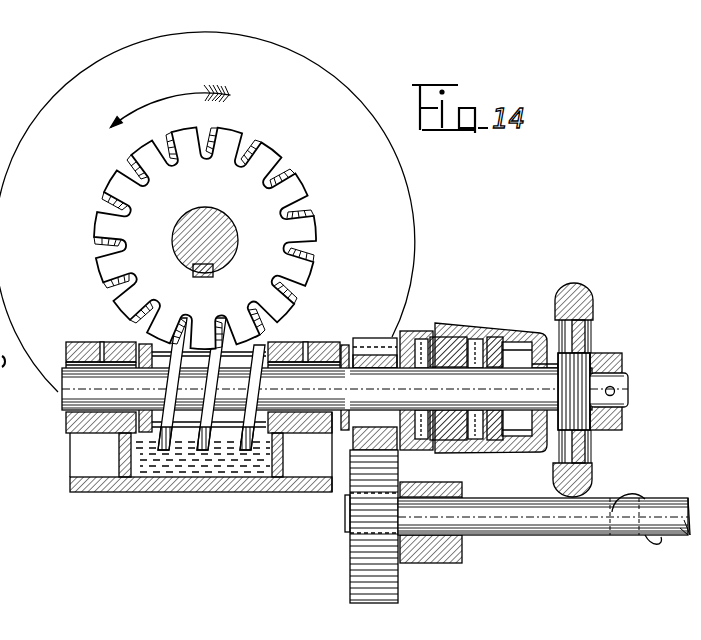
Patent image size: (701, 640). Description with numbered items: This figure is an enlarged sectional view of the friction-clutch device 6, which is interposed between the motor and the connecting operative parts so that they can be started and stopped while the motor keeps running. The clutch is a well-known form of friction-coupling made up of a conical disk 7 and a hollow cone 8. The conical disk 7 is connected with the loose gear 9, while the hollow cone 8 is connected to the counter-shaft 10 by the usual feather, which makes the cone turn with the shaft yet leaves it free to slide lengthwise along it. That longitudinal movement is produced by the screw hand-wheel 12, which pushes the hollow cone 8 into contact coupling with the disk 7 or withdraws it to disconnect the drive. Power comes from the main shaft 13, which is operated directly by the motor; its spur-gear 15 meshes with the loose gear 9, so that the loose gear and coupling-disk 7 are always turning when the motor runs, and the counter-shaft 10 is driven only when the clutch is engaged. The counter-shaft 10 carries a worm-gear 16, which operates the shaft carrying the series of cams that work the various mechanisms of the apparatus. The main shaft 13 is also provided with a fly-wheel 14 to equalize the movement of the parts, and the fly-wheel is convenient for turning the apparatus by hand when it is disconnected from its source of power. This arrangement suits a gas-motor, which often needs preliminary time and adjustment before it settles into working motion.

The friction-clutch device 6 is at (443, 473).
The conical disk 7 is at (420, 336).
The hollow cone 8 is at (496, 382).
The loose gear 9 is at (375, 341).
The shaft 10 is at (327, 389).
The screw hand-wheel 12 is at (590, 390).
The main shaft 13 is at (544, 519).
The fly-wheel 14 is at (242, 230).
The spur-gear 15 is at (356, 515).
The worm-gear 16 is at (209, 384).